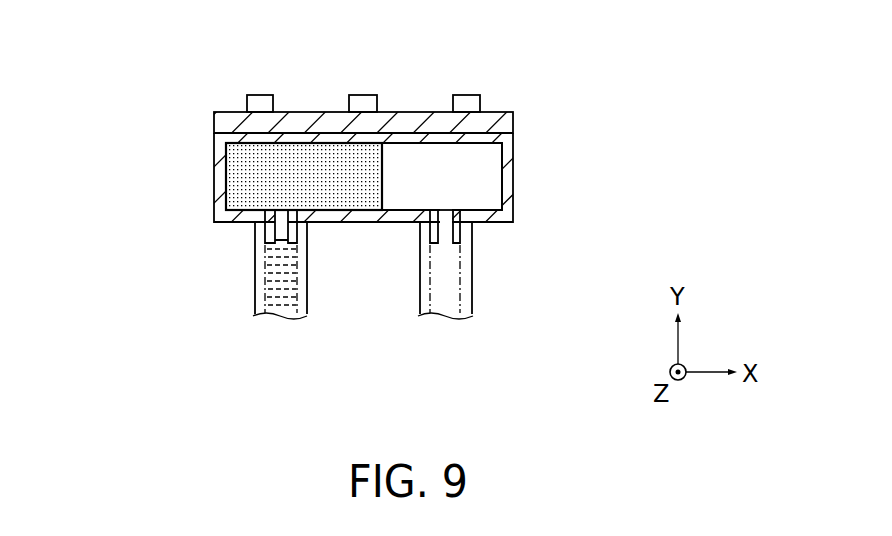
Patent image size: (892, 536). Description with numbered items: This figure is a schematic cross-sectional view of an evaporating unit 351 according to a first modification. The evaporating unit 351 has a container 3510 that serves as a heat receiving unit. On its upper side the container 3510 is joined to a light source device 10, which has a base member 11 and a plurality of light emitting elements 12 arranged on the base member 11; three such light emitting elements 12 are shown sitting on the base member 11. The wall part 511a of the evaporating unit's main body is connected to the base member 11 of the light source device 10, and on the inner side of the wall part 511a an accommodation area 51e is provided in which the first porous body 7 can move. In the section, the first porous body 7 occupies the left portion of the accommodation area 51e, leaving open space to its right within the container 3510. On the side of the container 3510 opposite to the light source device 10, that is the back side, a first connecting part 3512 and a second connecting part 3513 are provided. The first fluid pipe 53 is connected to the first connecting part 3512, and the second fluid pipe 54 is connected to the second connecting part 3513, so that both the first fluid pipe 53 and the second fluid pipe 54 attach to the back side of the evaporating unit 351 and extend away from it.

The evaporating unit 351 is at (372, 156).
The container 3510 is at (507, 178).
The light source device 10 is at (360, 156).
The base member 11 is at (511, 120).
The light emitting element 12 is at (470, 96).
The wall part 511a is at (323, 137).
The accommodation area 51e is at (425, 167).
The first porous body 7 is at (248, 175).
The second connecting part 3513 is at (266, 233).
The first connecting part 3512 is at (458, 233).
The second fluid pipe 54 is at (254, 292).
The first fluid pipe 53 is at (468, 292).